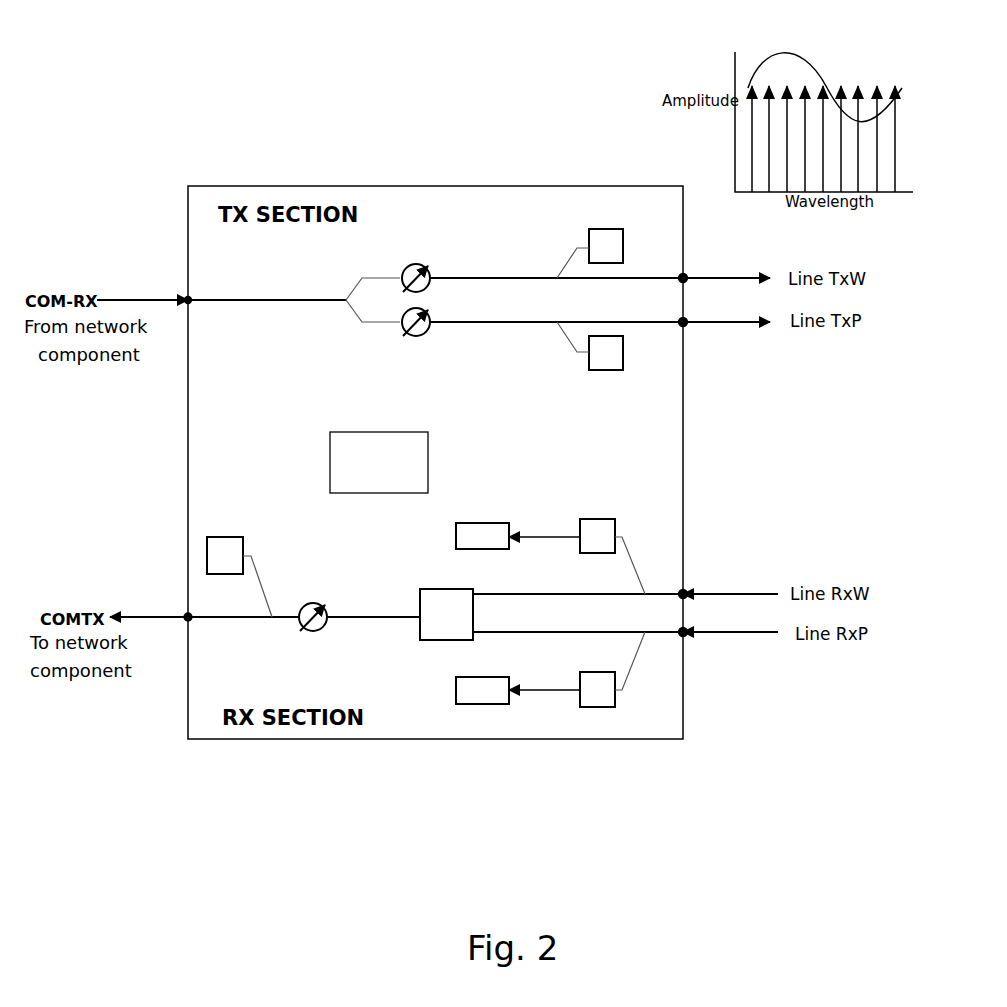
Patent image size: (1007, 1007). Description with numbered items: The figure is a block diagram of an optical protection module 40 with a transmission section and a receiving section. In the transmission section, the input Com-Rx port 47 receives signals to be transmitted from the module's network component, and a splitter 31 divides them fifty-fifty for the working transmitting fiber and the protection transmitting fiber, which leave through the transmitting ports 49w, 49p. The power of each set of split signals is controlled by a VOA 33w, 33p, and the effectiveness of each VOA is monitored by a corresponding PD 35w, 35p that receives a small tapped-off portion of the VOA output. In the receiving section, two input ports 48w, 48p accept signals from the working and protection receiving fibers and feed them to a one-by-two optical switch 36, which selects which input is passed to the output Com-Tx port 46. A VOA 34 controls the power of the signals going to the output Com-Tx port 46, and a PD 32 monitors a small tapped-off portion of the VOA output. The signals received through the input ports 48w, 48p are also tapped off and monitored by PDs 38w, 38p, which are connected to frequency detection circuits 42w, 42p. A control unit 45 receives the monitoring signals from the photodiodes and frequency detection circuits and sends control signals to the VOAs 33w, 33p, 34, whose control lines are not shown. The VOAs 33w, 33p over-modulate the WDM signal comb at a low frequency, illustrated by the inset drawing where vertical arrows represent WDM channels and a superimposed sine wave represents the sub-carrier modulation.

The protection module 40 is at (677, 717).
The input Com-Rx port 47 is at (193, 298).
The splitter 31 is at (344, 303).
The VOA (Variable Optical Attenuator) 33w is at (404, 268).
The VOA (Variable Optical Attenuator) 33p is at (410, 330).
The PD (PhotoDiode) 35w is at (608, 231).
The PD (PhotoDiode) 35p is at (608, 370).
The transmitting port 49w is at (686, 276).
The transmitting port 49p is at (686, 325).
The control unit 45 is at (330, 462).
The PD (PhotoDiode) 32 is at (243, 536).
The VOA (Variable Optical Attenuator) 34 is at (316, 602).
The 1×2 optical switch 36 is at (421, 589).
The PD (PhotoDiode) 38w is at (604, 523).
The PD (PhotoDiode) 38p is at (590, 705).
The frequency detection circuit 42w is at (480, 527).
The frequency detection circuit 42p is at (480, 684).
The output Com-Tx port 46 is at (192, 621).
The input port 48w is at (685, 590).
The input port 48p is at (685, 636).